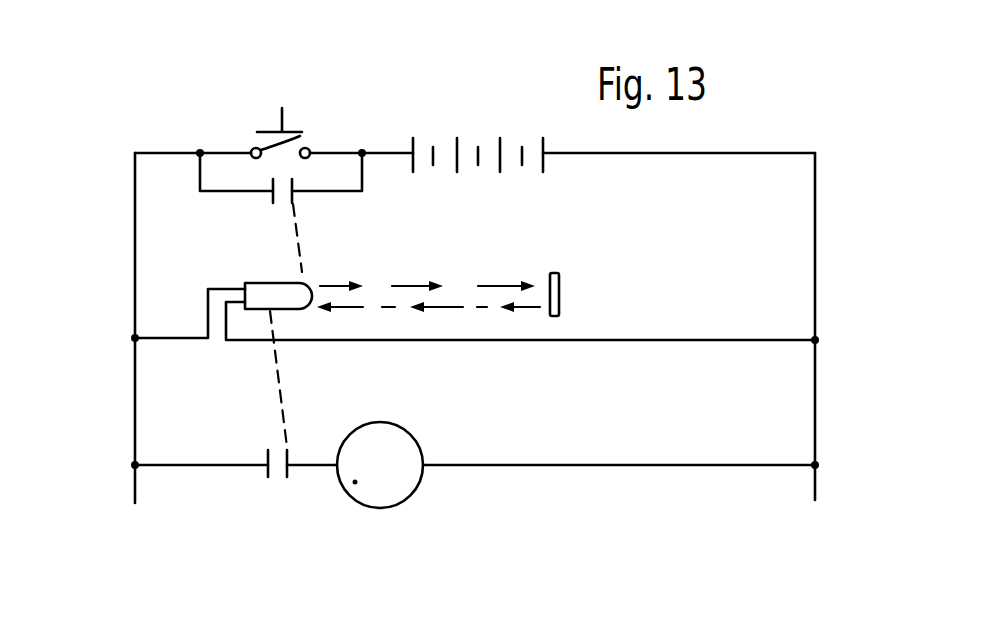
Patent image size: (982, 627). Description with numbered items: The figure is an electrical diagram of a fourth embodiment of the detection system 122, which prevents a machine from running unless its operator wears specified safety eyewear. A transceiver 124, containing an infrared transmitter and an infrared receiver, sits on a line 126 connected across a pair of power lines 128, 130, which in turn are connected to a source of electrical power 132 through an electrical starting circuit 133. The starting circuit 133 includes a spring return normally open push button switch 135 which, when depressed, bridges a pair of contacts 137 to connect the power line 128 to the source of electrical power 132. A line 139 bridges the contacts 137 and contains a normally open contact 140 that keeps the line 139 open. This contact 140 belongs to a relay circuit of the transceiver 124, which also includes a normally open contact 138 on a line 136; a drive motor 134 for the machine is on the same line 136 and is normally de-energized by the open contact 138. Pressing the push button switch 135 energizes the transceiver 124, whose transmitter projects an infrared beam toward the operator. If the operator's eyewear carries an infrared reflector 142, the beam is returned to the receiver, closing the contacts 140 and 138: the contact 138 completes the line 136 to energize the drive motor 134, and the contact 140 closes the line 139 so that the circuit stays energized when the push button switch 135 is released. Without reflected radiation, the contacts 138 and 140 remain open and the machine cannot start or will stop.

The detection system 122 is at (198, 104).
The transceiver 124 is at (283, 290).
The line 126 is at (647, 338).
The power line 128 is at (134, 280).
The power line 130 is at (817, 239).
The source of electrical power 132 is at (411, 151).
The electrical starting circuit 133 is at (297, 106).
The drive motor 134 is at (382, 508).
The push button switch 135 is at (276, 124).
The line 136 is at (522, 467).
The contacts 137 is at (310, 147).
The normally open contact 138 is at (262, 468).
The line 139 is at (213, 193).
The normally open contact 140 is at (270, 191).
The infrared reflector 142 is at (555, 273).